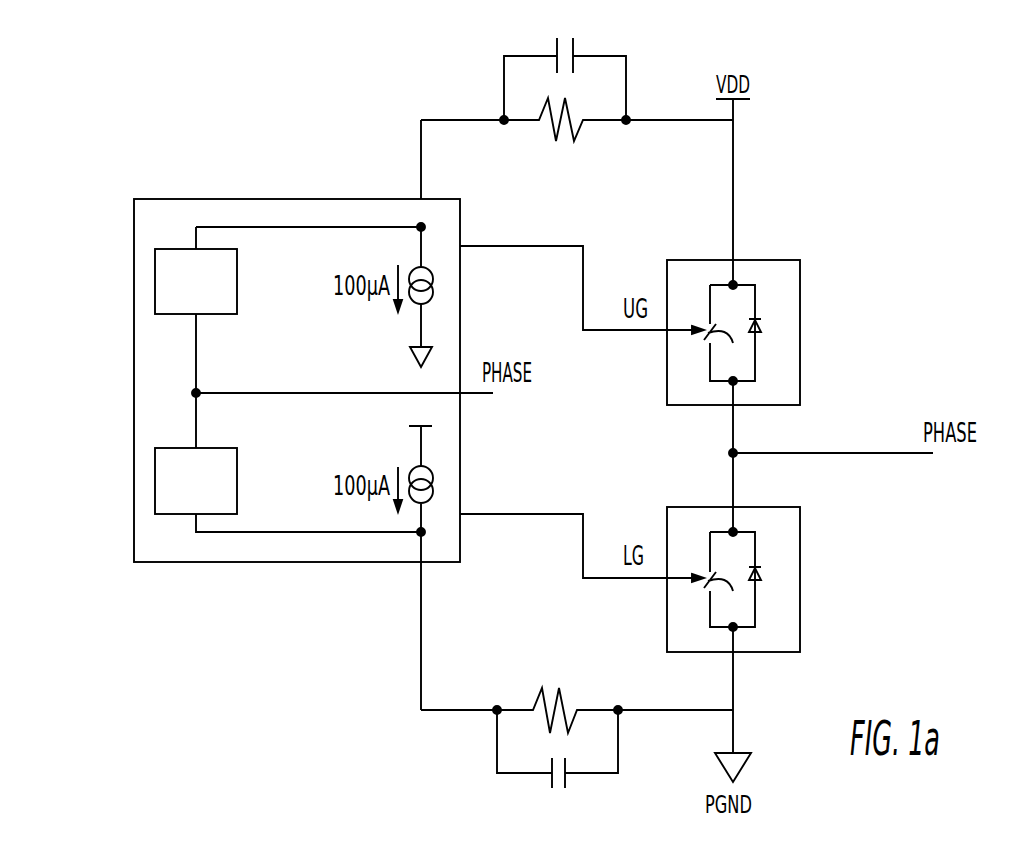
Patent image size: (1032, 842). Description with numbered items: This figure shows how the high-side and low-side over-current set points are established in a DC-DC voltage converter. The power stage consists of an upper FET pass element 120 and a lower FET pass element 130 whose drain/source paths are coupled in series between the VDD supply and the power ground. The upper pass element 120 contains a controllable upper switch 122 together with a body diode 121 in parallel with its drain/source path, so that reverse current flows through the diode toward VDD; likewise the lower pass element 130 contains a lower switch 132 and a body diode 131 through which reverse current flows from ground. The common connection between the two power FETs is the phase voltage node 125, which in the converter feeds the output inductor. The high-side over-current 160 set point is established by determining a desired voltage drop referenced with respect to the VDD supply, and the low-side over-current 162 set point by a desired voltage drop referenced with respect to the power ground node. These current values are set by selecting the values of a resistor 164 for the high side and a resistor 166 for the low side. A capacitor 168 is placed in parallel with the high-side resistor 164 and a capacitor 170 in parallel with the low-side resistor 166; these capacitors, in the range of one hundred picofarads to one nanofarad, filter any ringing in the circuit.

The upper FET pass element 120 is at (800, 280).
The body diode 121 is at (765, 324).
The upper switch 122 is at (729, 333).
The phase voltage node 125 is at (198, 396).
The lower FET pass element 130 is at (800, 527).
The body diode 131 is at (765, 572).
The lower switch 132 is at (729, 579).
The high-side over-current 160 is at (238, 274).
The low-side over-current 162 is at (238, 474).
The resistor 164 is at (570, 148).
The resistor 166 is at (570, 692).
The capacitor 168 is at (580, 45).
The capacitor 170 is at (573, 786).